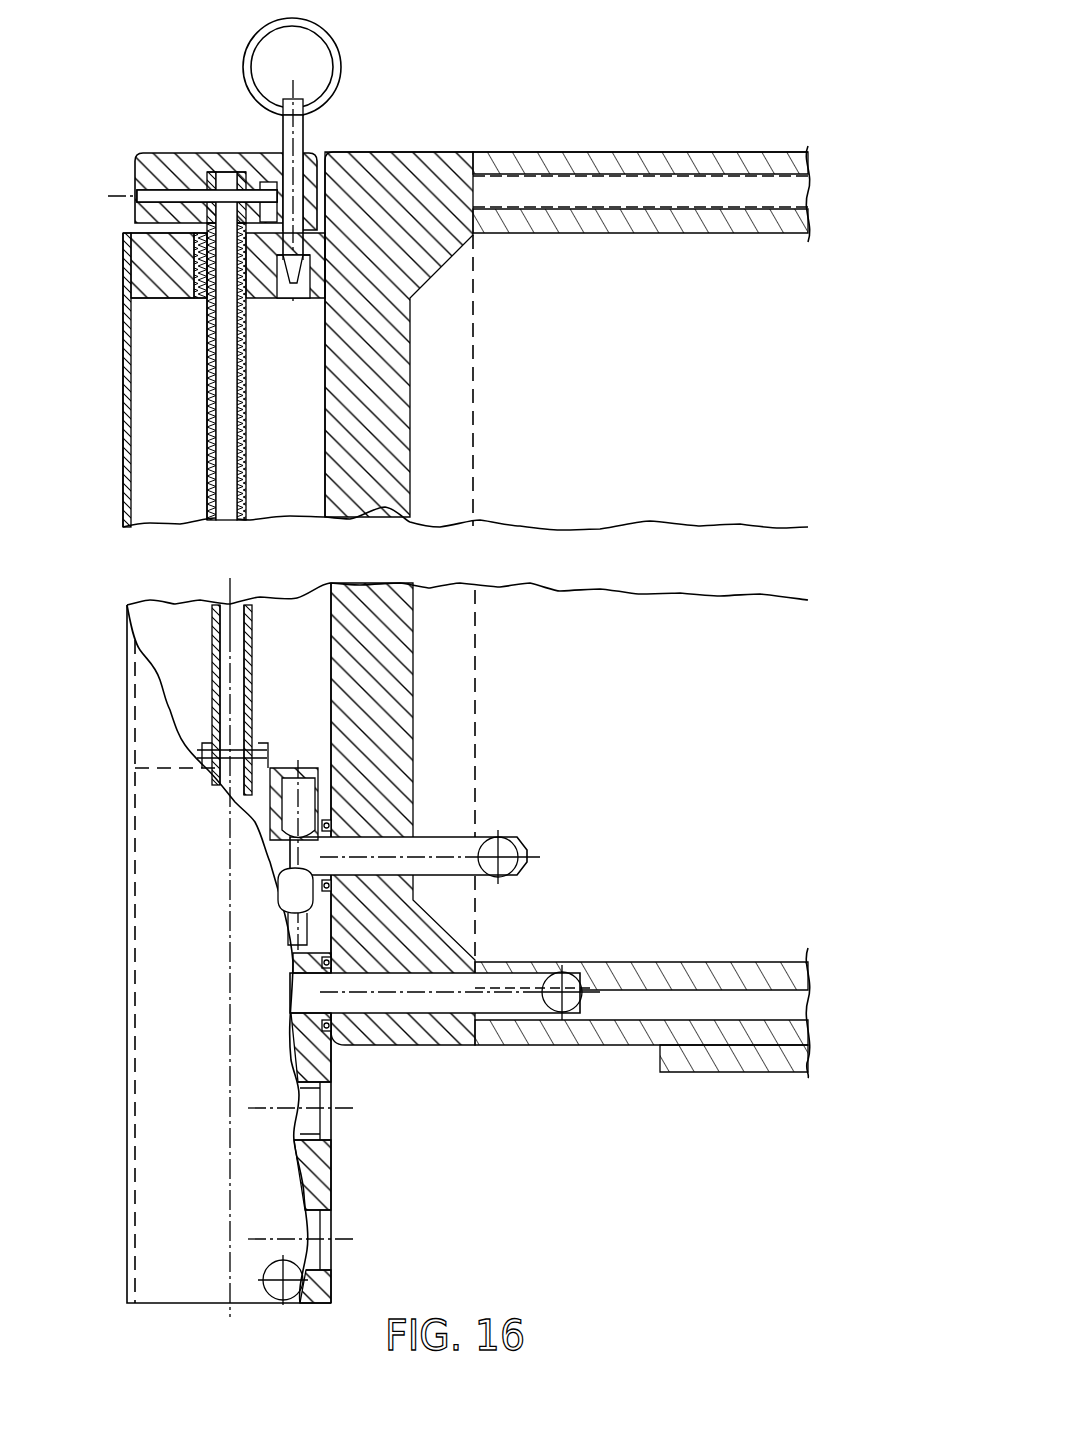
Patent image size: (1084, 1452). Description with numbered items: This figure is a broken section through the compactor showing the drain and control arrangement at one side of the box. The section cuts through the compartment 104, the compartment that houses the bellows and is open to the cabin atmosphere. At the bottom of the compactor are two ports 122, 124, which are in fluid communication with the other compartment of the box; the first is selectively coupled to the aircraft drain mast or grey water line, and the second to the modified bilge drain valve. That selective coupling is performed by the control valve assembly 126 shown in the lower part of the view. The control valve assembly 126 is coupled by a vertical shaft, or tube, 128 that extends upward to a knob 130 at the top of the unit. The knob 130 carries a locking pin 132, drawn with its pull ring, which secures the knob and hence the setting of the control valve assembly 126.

The compartment 104 is at (654, 802).
The port 122 is at (325, 1118).
The port 124 is at (327, 1247).
The control valve assembly 126 is at (158, 993).
The vertical shaft (tube) 128 is at (200, 455).
The knob 130 is at (168, 165).
The locking pin 132 is at (300, 136).